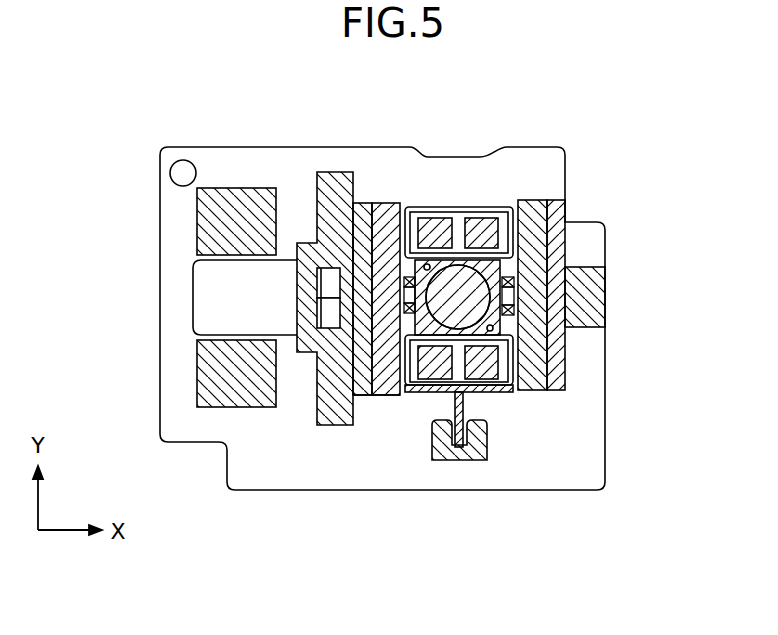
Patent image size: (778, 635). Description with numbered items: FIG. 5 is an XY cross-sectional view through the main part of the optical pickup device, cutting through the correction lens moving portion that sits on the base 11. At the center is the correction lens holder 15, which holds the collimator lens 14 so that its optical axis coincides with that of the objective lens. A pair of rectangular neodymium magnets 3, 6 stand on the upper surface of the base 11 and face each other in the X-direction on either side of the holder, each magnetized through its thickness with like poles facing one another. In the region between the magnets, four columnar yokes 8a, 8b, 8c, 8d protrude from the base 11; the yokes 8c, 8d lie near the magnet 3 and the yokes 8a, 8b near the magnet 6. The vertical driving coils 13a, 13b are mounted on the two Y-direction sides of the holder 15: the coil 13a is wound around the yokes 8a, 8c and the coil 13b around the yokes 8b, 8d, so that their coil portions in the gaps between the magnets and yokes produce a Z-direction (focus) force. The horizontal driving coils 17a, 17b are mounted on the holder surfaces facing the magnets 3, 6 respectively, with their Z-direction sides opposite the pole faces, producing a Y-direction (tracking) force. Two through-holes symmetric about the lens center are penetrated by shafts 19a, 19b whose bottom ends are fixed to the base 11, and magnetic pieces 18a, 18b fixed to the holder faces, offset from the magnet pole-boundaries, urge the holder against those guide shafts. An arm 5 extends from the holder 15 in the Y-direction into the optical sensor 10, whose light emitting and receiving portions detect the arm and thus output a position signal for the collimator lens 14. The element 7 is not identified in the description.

The magnet 3 is at (533, 207).
The arm 5 is at (462, 408).
The magnet 6 is at (382, 213).
The base plate 7 is at (328, 186).
The yoke 8a is at (427, 232).
The yoke 8b is at (383, 395).
The yoke 8c is at (490, 222).
The yoke 8d is at (495, 365).
The optical sensor 10 is at (472, 457).
The base 11 is at (585, 467).
The vertical driving coil 13a is at (472, 215).
The vertical driving coil 13b is at (412, 393).
The collimator lens 14 is at (448, 272).
The correction lens holder 15 is at (552, 255).
The horizontal driving coil 17a is at (514, 313).
The horizontal driving coil 17b is at (377, 314).
The magnetic piece 18a is at (514, 290).
The magnetic piece 18b is at (377, 291).
The shaft 19a is at (545, 330).
The shaft 19b is at (353, 250).